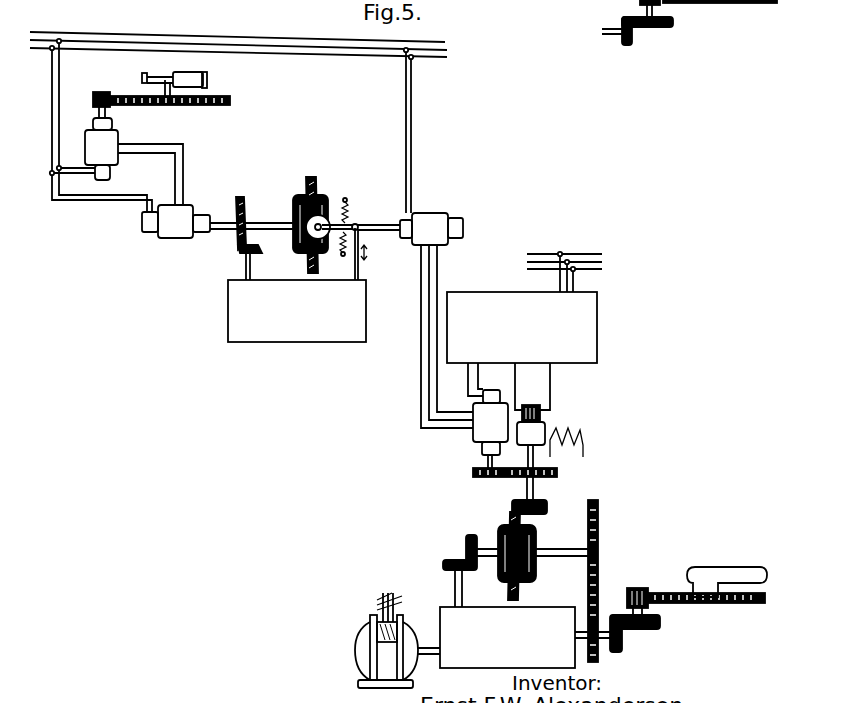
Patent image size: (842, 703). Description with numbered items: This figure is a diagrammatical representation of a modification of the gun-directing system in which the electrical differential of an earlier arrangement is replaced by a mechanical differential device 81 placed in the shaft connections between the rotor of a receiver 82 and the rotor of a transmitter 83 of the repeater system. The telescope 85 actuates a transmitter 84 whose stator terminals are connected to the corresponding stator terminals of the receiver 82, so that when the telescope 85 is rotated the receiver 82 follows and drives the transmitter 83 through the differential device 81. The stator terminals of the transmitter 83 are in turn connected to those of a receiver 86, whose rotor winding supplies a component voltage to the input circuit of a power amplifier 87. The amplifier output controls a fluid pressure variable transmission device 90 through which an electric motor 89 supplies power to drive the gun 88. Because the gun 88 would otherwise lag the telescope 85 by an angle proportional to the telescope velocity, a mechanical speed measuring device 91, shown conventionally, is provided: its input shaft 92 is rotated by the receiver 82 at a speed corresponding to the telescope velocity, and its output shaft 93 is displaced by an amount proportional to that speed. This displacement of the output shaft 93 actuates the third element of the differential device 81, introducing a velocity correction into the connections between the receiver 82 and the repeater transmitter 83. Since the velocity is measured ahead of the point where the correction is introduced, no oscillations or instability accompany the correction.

The mechanical differential device 81 is at (325, 225).
The receiver 82 is at (217, 221).
The transmitter 83 is at (436, 320).
The transmitter 84 is at (134, 156).
The telescope 85 is at (187, 76).
The receiver 86 is at (490, 429).
The power amplifier 87 is at (524, 360).
The gun 88 is at (733, 570).
The electric motor 89 is at (362, 636).
The variable transmission device 90 is at (526, 637).
The mechanical speed measuring device 91 is at (297, 311).
The input shaft 92 is at (246, 265).
The output shaft 93 is at (359, 263).